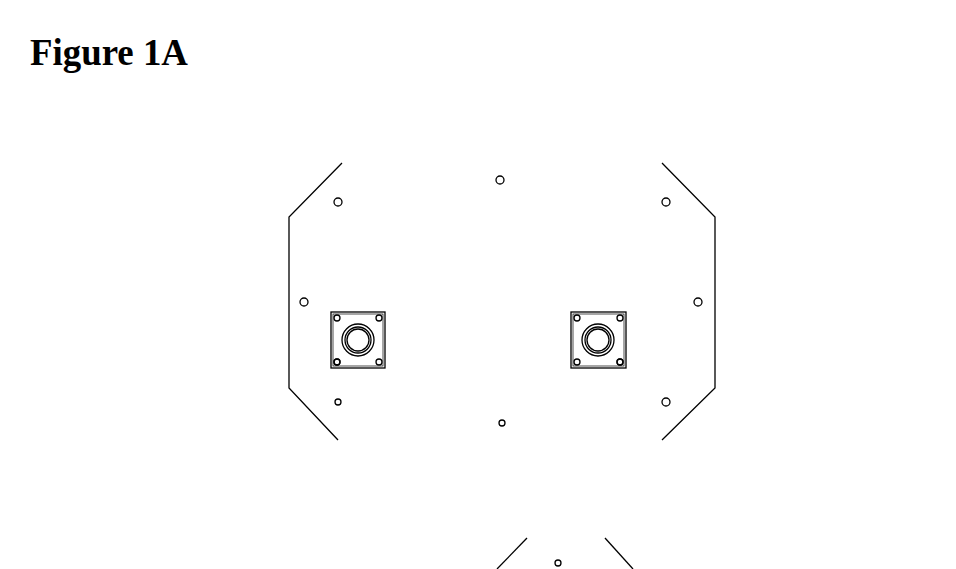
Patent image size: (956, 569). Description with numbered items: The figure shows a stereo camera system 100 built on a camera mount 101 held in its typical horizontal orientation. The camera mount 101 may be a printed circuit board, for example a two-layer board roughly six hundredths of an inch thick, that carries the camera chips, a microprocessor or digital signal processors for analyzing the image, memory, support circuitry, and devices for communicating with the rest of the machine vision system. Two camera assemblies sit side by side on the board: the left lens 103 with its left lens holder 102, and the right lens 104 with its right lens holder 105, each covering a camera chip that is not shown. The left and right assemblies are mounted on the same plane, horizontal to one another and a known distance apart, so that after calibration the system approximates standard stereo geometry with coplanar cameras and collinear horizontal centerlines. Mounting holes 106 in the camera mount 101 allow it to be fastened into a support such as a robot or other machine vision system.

The stereo camera system 100 is at (504, 104).
The camera mount 101 is at (727, 258).
The left lens holder 102 is at (623, 361).
The left lens 103 is at (600, 338).
The right lens 104 is at (358, 340).
The right lens holder 105 is at (336, 362).
The mounting holes 106 is at (500, 427).